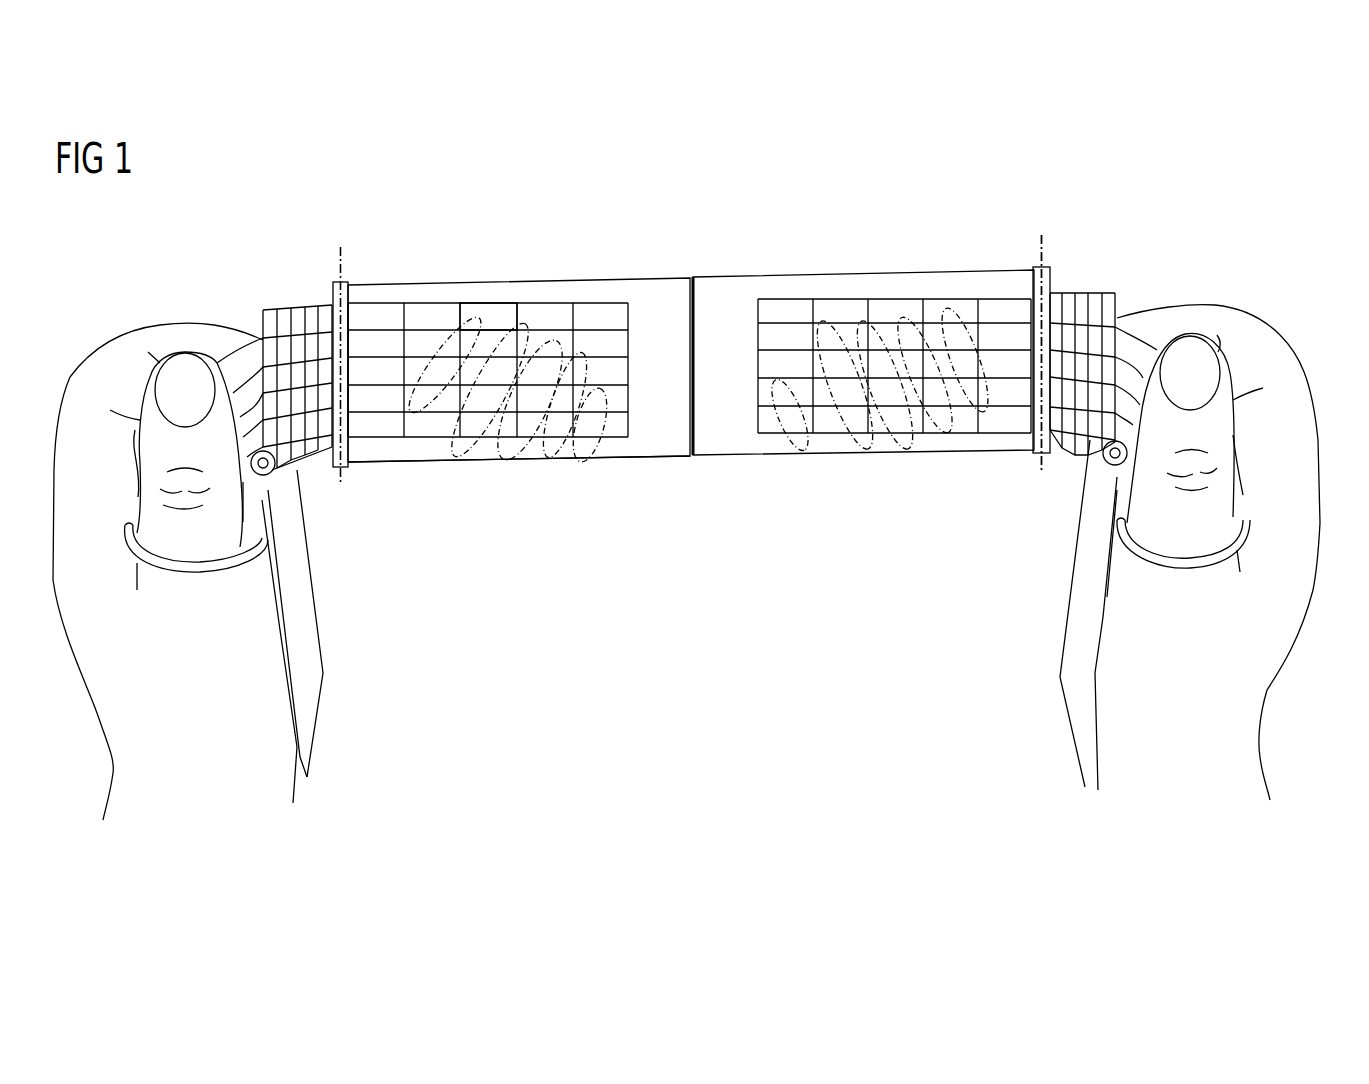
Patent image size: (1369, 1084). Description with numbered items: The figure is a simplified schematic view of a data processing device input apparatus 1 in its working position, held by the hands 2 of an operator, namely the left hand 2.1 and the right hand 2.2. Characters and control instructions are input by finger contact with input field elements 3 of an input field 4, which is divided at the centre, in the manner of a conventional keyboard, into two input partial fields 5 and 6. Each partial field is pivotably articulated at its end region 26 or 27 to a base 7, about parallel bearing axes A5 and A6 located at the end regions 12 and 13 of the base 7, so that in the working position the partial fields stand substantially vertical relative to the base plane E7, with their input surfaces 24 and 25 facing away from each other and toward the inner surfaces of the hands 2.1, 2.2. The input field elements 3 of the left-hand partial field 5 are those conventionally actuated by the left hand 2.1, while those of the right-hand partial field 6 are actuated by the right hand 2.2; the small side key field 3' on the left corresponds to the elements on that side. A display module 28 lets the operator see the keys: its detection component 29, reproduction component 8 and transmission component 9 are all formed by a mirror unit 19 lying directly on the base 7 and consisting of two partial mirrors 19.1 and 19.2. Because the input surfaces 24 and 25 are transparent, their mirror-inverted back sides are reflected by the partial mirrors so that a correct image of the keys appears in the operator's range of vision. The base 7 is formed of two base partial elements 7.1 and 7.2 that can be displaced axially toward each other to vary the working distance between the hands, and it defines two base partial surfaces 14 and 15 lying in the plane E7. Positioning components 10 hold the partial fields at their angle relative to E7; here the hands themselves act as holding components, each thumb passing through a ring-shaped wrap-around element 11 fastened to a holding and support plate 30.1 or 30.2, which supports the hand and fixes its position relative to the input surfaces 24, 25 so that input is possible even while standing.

The data processing device input apparatus 1 is at (690, 335).
The hands 2 is at (157, 312).
The left hand 2.1 is at (159, 571).
The right hand 2.2 is at (1219, 552).
The input field elements 3 is at (1088, 466).
The left side key field 3' is at (302, 477).
The input field 4 is at (1078, 362).
The input partial field 5 is at (291, 368).
The input partial field 6 is at (1052, 434).
The base 7 is at (691, 362).
The base partial element 7.1 is at (556, 445).
The base partial element 7.2 is at (830, 442).
The reproduction component 8 is at (532, 272).
The transmission component 9 is at (535, 289).
The positioning components 10 is at (689, 621).
The wrap-around element 11 is at (180, 570).
The end region of the base 12 is at (378, 282).
The end region of the base 13 is at (1045, 231).
The base partial surface 14 is at (605, 445).
The base partial surface 15 is at (893, 442).
The mirror unit 19 is at (481, 289).
The partial mirror 19.1 is at (440, 432).
The partial mirror 19.2 is at (797, 430).
The input surface 24 is at (222, 372).
The input surface 25 is at (1120, 343).
The end region 26 is at (322, 466).
The end region 27 is at (1035, 432).
The display module 28 is at (532, 272).
The detection or recording component 29 is at (532, 272).
The holding and support plate 30.1 is at (307, 640).
The holding and support plate 30.2 is at (1077, 627).
The bearing axis A5 is at (341, 262).
The bearing axis A6 is at (1041, 242).
The reference plane E7 is at (665, 443).